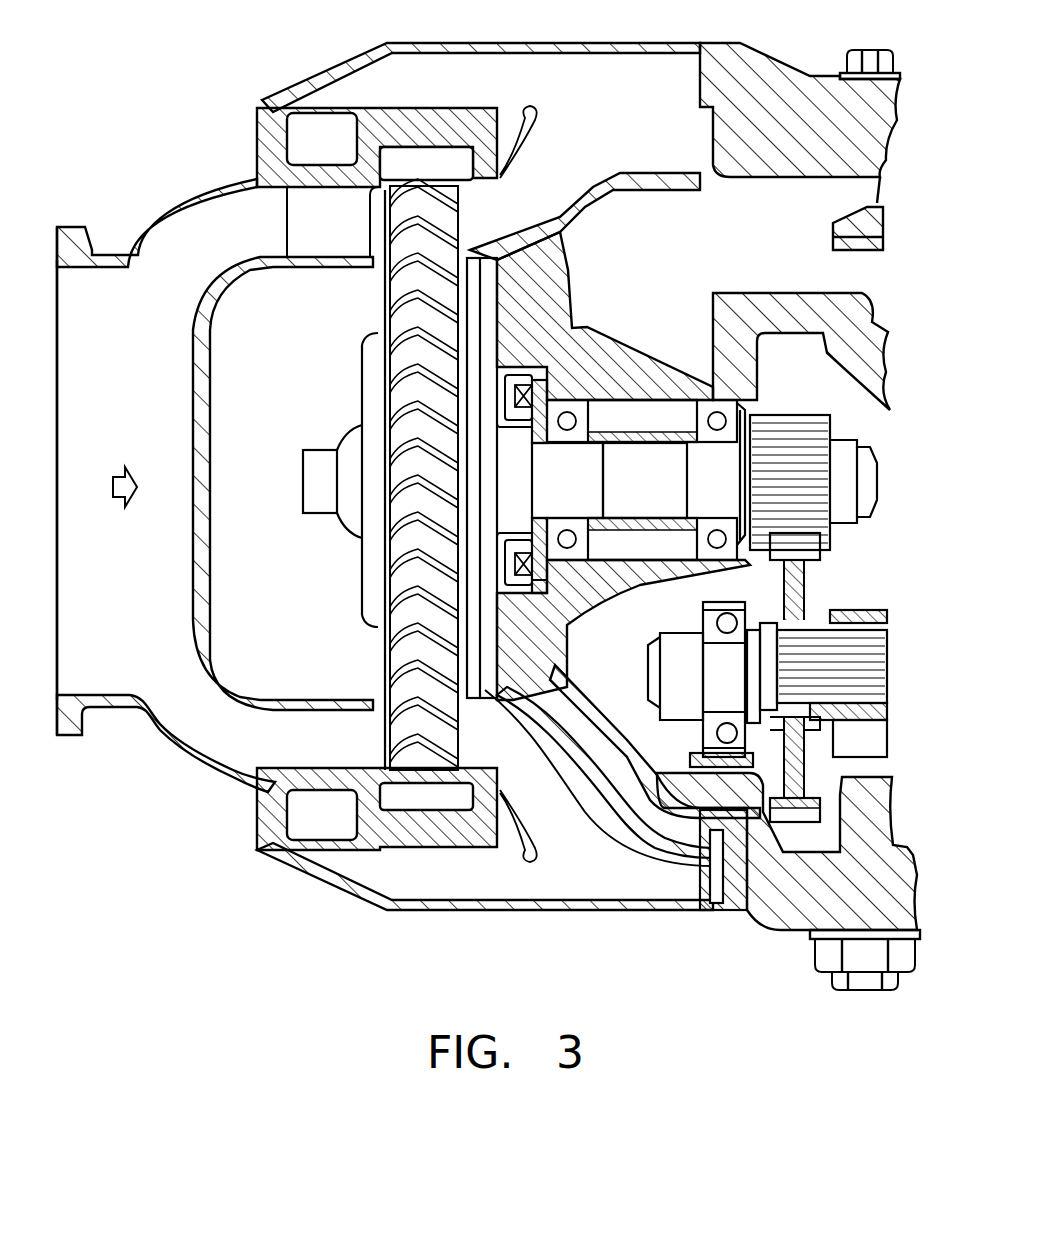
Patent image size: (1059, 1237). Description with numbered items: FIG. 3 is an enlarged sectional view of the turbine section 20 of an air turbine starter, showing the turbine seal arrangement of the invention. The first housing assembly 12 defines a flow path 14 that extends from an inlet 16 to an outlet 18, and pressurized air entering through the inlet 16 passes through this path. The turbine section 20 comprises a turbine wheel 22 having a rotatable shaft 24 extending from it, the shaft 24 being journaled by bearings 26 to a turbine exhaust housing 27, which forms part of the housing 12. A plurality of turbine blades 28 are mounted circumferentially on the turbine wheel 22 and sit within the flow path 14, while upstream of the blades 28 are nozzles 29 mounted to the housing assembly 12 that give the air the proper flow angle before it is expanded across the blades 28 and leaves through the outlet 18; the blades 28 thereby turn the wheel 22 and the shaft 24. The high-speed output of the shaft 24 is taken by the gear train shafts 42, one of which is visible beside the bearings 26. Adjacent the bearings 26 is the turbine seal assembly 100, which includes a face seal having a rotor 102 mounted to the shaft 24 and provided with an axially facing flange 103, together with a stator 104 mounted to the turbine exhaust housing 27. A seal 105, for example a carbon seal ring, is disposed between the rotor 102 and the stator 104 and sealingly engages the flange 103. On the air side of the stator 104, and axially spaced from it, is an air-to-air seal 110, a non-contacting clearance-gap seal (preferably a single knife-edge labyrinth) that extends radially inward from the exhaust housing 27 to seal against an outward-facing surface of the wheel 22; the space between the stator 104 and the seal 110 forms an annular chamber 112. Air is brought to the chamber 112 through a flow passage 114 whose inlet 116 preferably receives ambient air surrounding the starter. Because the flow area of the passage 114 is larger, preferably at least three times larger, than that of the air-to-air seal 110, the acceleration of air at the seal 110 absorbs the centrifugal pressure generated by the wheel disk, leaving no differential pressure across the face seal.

The first housing assembly 12 is at (497, 40).
The flow path 14 is at (138, 600).
The inlet 16 is at (112, 495).
The outlet 18 is at (638, 110).
The turbine section 20 is at (322, 397).
The turbine wheel 22 is at (362, 586).
The rotatable shaft 24 is at (847, 510).
The bearings 26 is at (692, 413).
The turbine exhaust housing 27 is at (575, 278).
The turbine blades 28 is at (462, 212).
The nozzles 29 is at (338, 226).
The shafts 42 is at (648, 673).
The turbine seal assembly 100 is at (472, 454).
The rotor 102 is at (543, 403).
The axially facing flange 103 is at (523, 428).
The stator 104 is at (580, 632).
The seal 105 is at (591, 605).
The air-to-air seal 110 is at (502, 380).
The annular chamber 112 is at (522, 515).
The flow passage 114 is at (587, 723).
The inlet 116 is at (737, 905).